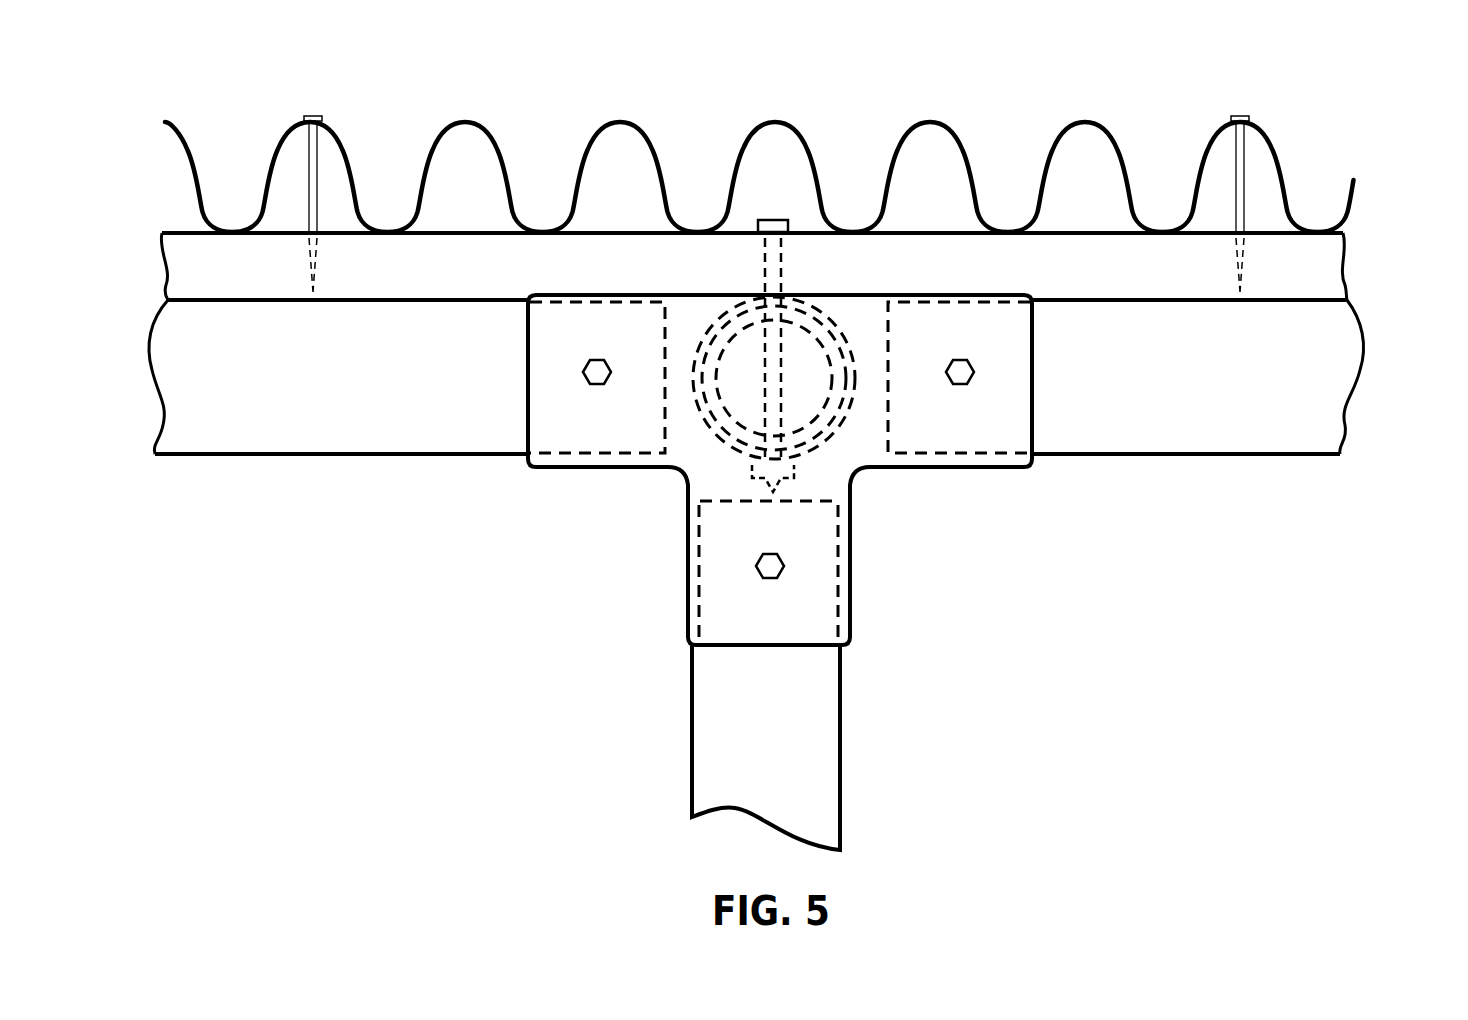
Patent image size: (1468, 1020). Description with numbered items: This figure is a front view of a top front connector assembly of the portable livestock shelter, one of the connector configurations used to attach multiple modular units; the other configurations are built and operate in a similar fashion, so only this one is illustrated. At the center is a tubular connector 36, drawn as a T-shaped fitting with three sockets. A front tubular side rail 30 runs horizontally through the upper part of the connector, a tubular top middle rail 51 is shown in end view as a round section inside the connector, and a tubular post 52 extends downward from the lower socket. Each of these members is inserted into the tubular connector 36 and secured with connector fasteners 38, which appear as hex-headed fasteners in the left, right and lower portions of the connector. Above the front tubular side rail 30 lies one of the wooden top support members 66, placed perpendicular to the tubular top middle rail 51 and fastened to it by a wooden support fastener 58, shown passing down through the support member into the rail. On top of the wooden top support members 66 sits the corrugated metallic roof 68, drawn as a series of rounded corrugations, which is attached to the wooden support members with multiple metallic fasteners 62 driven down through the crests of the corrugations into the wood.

The front tubular side rail 30 is at (1335, 382).
The tubular connector 36 is at (712, 440).
The connector fasteners 38 is at (957, 366).
The tubular top middle rail 51 is at (832, 425).
The tubular post 52 is at (822, 740).
The wooden support fasteners 58 is at (777, 220).
The metallic fasteners 62 is at (313, 112).
The wooden top support members 66 is at (1323, 266).
The corrugated metallic roof 68 is at (775, 120).